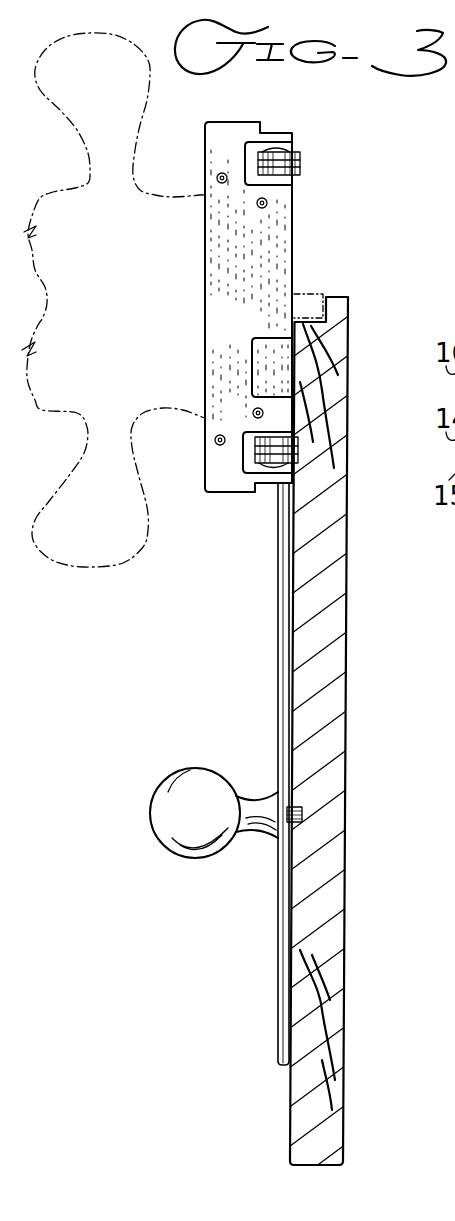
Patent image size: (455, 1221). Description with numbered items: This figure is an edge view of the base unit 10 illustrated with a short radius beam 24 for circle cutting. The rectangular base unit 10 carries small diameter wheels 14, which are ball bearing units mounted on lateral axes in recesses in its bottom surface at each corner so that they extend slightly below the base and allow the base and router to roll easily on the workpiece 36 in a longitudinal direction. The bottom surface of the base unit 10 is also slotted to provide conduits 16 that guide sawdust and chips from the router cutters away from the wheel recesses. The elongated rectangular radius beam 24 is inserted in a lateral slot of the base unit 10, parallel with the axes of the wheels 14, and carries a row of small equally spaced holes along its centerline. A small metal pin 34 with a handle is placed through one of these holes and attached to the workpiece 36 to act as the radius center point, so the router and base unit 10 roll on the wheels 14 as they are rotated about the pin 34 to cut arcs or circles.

The base unit 10 is at (279, 102).
The small diameter wheels 14 is at (300, 169).
The conduits 16 is at (273, 350).
The radius beam 24 is at (278, 634).
The metal pin 34 is at (302, 815).
The workpiece 36 is at (348, 687).